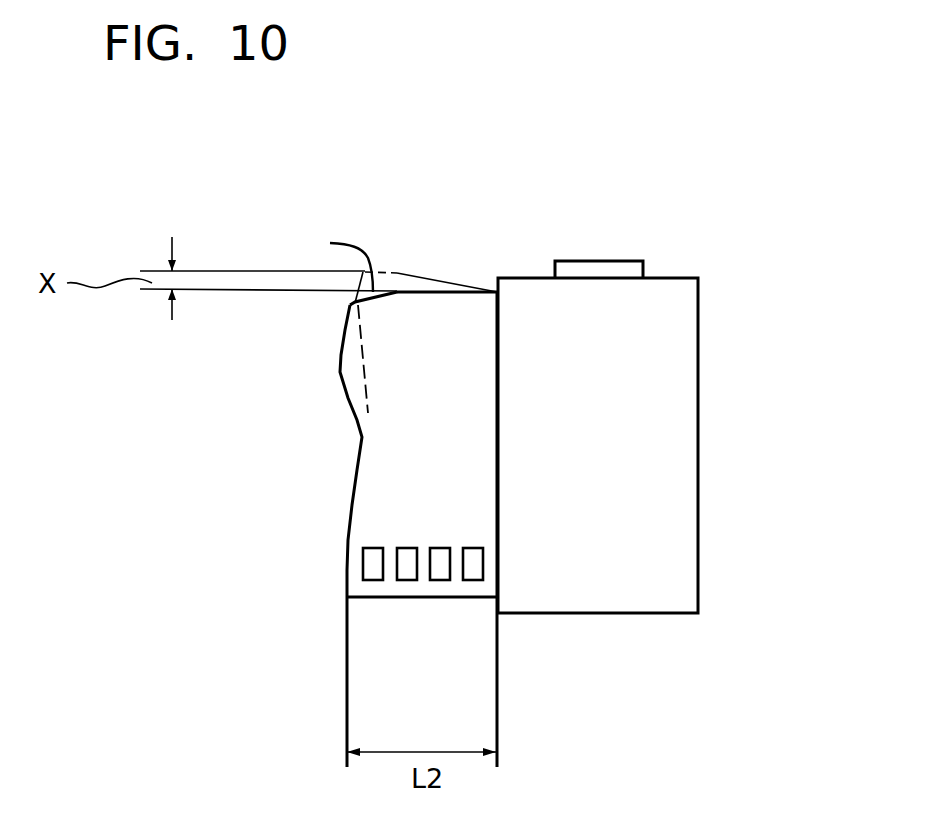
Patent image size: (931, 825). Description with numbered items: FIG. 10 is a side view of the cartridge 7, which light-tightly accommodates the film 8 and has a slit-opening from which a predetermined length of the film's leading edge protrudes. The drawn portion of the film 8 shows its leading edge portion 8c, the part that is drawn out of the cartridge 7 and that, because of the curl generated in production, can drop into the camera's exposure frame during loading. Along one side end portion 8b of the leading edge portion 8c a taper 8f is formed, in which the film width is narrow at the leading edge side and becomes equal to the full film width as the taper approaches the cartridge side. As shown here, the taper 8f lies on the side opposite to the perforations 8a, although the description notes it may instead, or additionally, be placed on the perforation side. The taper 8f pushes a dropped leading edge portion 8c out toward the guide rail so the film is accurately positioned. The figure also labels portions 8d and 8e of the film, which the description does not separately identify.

The cartridge 7 is at (673, 337).
The film 8 is at (364, 513).
The perforations 8a is at (372, 562).
The side end portion 8b is at (418, 291).
The leading edge portion 8c is at (390, 435).
The stepped corner 8d is at (343, 325).
The side wall 8e is at (362, 470).
The taper 8f is at (368, 248).